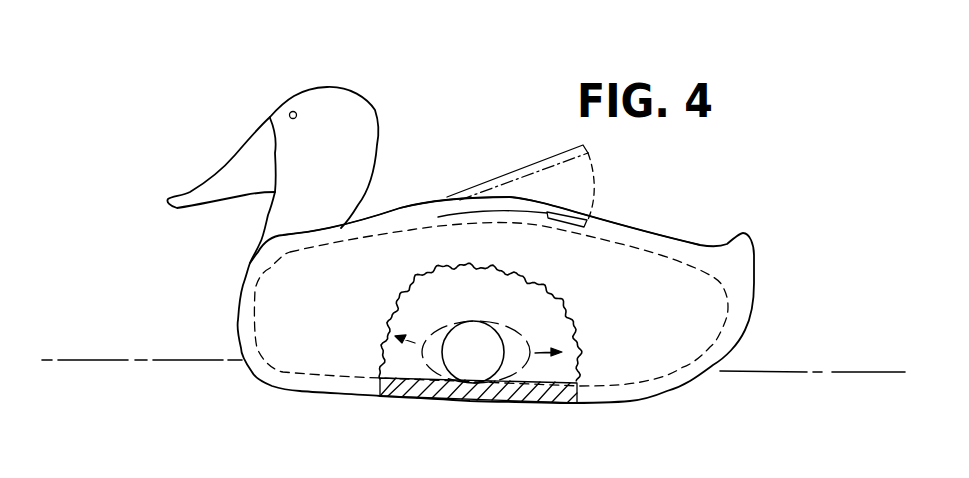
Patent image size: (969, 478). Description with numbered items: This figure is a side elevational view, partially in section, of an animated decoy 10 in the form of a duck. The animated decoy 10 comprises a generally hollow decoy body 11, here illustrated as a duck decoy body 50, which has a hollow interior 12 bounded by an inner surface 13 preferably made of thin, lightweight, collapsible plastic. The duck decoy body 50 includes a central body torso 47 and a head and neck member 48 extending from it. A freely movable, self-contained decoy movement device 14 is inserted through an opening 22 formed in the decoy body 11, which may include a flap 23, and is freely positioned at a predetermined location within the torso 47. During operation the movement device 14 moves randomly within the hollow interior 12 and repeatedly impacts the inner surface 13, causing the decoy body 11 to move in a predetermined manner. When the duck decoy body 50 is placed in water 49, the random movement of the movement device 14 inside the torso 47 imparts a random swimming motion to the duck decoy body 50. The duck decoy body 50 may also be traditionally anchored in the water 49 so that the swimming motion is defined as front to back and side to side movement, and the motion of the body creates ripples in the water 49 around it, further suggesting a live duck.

The animated decoy 10 is at (437, 73).
The decoy body 11 is at (682, 240).
The hollow interior 12 is at (617, 362).
The inner surface 13 is at (416, 375).
The decoy movement device 14 is at (483, 362).
The opening 22 is at (550, 211).
The flap 23 is at (535, 203).
The central body torso 47 is at (314, 308).
The head and neck member 48 is at (363, 145).
The water 49 is at (790, 371).
The duck decoy body 50 is at (401, 211).